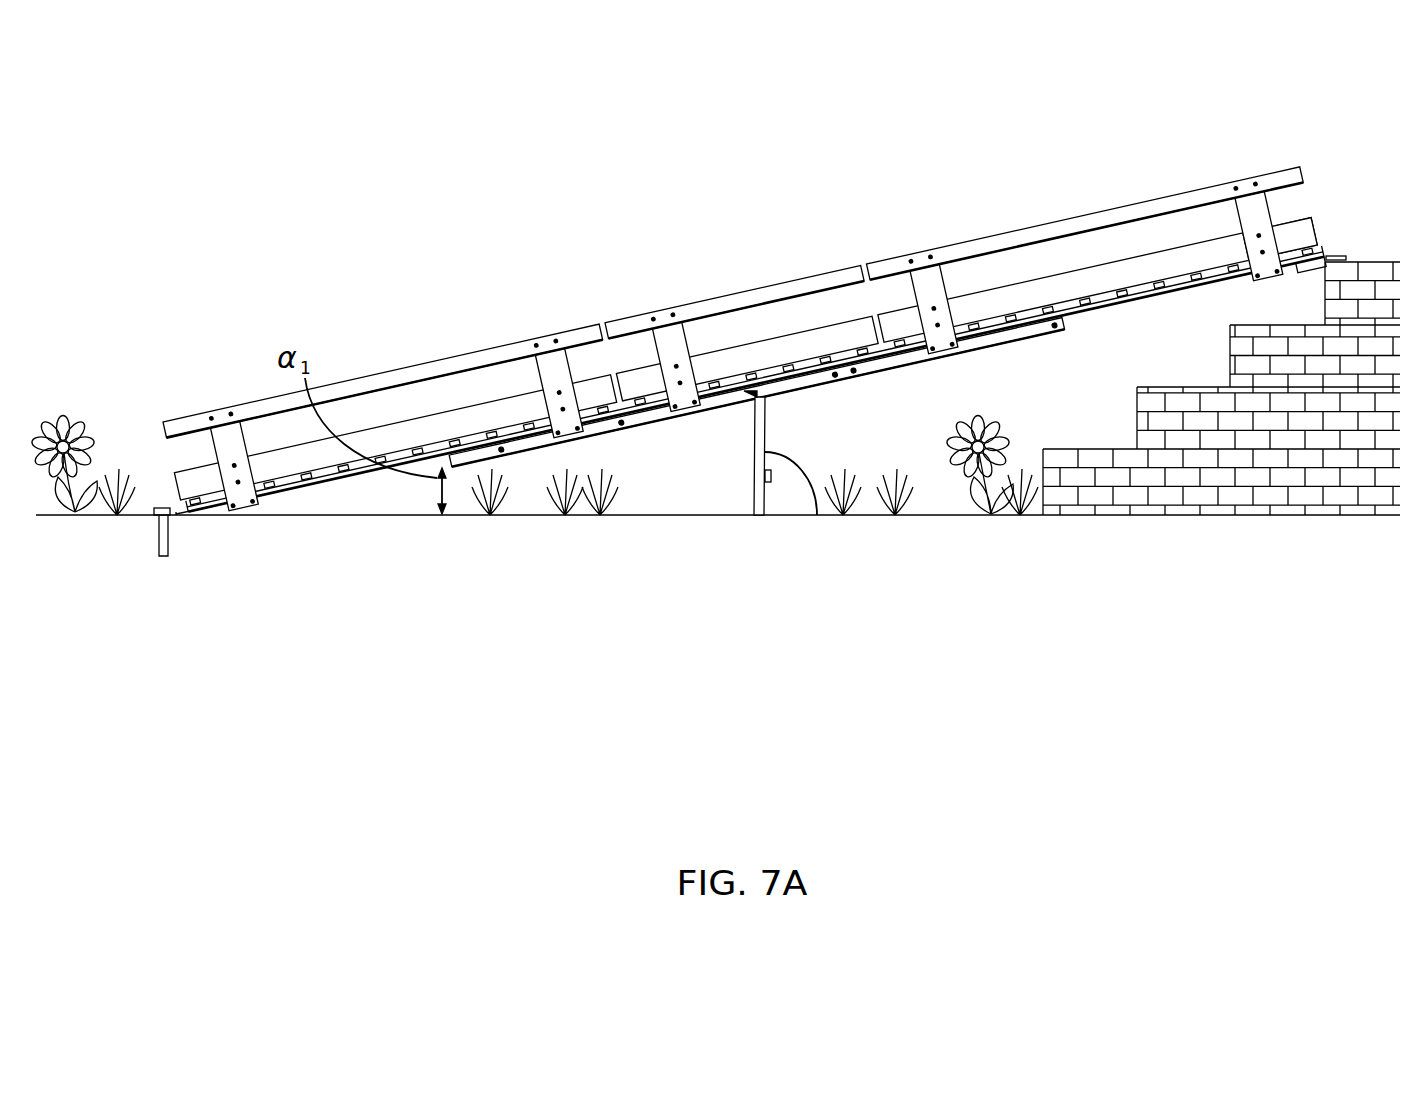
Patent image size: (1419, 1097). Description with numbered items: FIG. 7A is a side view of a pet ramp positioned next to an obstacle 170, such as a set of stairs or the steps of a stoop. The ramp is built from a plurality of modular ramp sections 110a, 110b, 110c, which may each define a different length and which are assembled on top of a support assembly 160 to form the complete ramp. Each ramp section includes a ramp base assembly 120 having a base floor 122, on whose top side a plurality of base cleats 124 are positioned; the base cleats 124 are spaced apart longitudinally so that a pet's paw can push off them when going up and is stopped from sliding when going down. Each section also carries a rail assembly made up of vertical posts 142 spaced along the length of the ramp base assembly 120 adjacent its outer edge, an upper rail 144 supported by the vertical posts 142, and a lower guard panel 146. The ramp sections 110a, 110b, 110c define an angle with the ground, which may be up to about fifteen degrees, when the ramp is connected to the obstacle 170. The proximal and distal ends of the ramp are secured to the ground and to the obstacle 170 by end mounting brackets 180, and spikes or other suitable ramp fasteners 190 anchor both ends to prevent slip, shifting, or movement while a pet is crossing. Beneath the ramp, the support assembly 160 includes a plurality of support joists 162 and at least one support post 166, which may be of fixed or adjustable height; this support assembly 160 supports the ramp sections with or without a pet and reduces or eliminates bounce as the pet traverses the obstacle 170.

The ramp section 110a is at (447, 358).
The ramp section 110b is at (705, 300).
The ramp section 110c is at (1275, 173).
The ramp base assembly 120 is at (1318, 249).
The base floor 122 is at (906, 338).
The base cleats 124 is at (1084, 304).
The vertical posts 142 is at (225, 428).
The upper rail 144 is at (747, 271).
The lower guard panel 146 is at (1287, 238).
The support assembly 160 is at (762, 606).
The support joists 162 is at (663, 423).
The support post 166 is at (817, 515).
The obstacle 170 is at (1267, 458).
The end mounting brackets 180 is at (194, 514).
The spikes or ramp fastener 190 is at (162, 557).